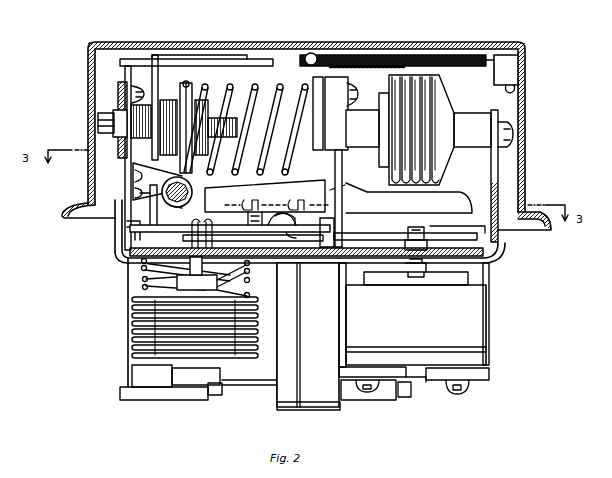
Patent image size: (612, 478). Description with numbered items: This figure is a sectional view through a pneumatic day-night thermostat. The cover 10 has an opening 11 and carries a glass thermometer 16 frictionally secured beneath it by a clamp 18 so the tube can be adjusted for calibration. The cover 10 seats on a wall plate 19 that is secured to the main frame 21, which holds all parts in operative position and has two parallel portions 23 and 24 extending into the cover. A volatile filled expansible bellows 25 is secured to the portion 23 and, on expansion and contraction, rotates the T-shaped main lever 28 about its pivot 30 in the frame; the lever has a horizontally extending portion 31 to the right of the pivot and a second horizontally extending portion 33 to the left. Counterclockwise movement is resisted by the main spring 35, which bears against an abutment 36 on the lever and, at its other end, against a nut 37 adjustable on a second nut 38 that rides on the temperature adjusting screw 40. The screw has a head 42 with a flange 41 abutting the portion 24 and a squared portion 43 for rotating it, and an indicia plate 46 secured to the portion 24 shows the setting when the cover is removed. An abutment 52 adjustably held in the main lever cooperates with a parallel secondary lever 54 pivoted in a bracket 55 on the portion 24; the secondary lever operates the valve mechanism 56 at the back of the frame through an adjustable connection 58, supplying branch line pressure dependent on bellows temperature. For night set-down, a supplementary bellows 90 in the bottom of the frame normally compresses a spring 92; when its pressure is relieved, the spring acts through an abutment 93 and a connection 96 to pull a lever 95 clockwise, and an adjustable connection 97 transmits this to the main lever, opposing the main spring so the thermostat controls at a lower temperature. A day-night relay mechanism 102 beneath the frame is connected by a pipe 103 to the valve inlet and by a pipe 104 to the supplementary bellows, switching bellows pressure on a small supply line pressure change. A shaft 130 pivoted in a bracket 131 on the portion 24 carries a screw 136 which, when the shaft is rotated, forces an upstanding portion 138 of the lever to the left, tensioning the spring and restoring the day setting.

The cover 10 is at (325, 46).
The opening 11 is at (266, 62).
The glass thermometer 16 is at (460, 68).
The clamp 18 is at (390, 68).
The wall plate 19 is at (67, 209).
The main frame 21 is at (117, 242).
The frame portion 23 is at (490, 173).
The frame portion 24 is at (125, 177).
The volatile filled expansible bellows 25 is at (447, 100).
The main lever 28 is at (343, 164).
The pivot 30 is at (343, 228).
The horizontally extending portion 31 is at (413, 213).
The second horizontally extending portion 33 is at (296, 196).
The main spring 35 is at (250, 95).
The abutment 36 is at (302, 106).
The nut 37 is at (200, 80).
The second nut 38 is at (166, 97).
The temperature adjusting screw 40 is at (141, 139).
The flange 41 is at (138, 94).
The head 42 is at (118, 136).
The squared portion 43 is at (107, 112).
The indicia plate 46 is at (239, 86).
The abutment 52 is at (290, 234).
The secondary lever 54 is at (449, 234).
The bracket 55 is at (133, 223).
The valve mechanism 56 is at (420, 325).
The adjustable connection 58 is at (402, 232).
The supplementary bellows 90 is at (130, 323).
The spring 92 is at (143, 280).
The abutment 93 is at (241, 294).
The lever 95 is at (270, 226).
The connection 96 is at (205, 243).
The adjustable connection 97 is at (257, 221).
The day-night relay mechanism 102 is at (304, 402).
The pipe 103 is at (368, 402).
The pipe 104 is at (254, 388).
The shaft 130 is at (205, 196).
The bracket 131 is at (166, 178).
The screw 136 is at (185, 208).
The upstanding portion 138 is at (140, 193).